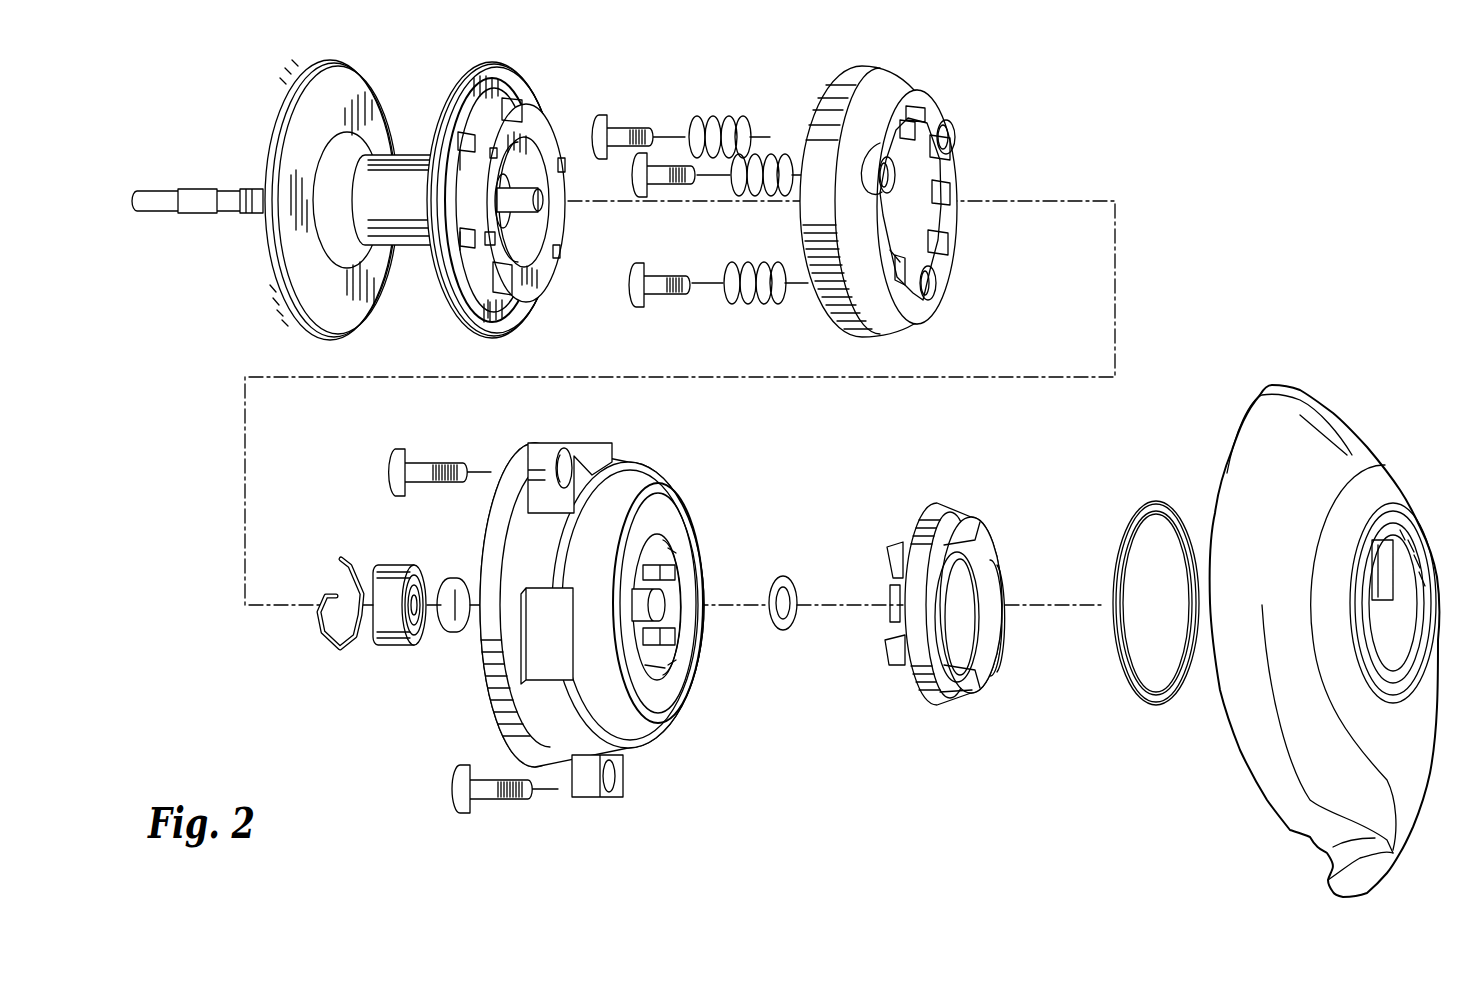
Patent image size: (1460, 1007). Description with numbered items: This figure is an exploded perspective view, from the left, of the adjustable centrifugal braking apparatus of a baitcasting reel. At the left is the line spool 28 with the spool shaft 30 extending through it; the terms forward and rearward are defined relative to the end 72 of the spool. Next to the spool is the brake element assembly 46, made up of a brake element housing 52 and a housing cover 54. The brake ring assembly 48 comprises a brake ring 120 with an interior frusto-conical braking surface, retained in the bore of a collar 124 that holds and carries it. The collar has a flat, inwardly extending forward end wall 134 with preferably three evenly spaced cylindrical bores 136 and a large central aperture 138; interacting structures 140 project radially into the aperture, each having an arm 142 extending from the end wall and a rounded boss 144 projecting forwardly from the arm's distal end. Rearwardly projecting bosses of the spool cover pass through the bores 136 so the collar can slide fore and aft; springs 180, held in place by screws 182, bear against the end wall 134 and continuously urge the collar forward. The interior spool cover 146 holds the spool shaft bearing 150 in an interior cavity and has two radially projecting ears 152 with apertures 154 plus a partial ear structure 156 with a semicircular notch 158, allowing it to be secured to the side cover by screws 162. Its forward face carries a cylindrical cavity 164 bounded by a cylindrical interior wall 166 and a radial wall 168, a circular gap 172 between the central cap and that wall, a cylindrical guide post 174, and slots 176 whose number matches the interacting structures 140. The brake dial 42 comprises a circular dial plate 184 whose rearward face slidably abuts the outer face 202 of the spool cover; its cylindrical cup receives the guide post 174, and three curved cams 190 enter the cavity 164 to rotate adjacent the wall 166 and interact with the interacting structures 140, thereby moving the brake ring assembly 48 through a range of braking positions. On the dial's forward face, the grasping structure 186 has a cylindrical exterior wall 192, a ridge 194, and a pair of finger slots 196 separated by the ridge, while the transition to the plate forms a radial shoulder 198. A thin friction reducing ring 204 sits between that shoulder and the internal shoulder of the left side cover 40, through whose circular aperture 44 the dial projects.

The line spool 28 is at (342, 64).
The spool shaft 30 is at (153, 187).
The brake element assembly 46 is at (544, 75).
The brake element housing 52 is at (478, 285).
The housing cover 54 is at (538, 275).
The end of line spool 72 is at (497, 313).
The brake ring assembly 48 is at (920, 193).
The brake ring 120 is at (812, 113).
The collar 124 is at (898, 320).
The forward end wall 134 is at (943, 188).
The cylindrical bores 136 is at (953, 128).
The central aperture 138 is at (907, 210).
The interacting structures 140 is at (913, 120).
The arm 142 is at (890, 250).
The rounded boss 144 is at (915, 240).
The biasing members 180 is at (725, 117).
The screws 182 is at (607, 112).
The interior spool cover 146 is at (621, 629).
The spool shaft bearing 150 is at (390, 574).
The radially projecting ears 152 is at (554, 454).
The apertures 154 is at (568, 460).
The partial ear structure 156 is at (643, 809).
The semicircular notch 158 is at (607, 795).
The screws 162 is at (388, 455).
The cylindrical cavity 164 is at (657, 552).
The cylindrical interior wall 166 is at (657, 663).
The radial wall 168 is at (641, 582).
The circular gap 172 is at (641, 638).
The cylindrical guide post 174 is at (665, 612).
The slots 176 is at (672, 631).
The outer face of spool cover 202 is at (657, 517).
The brake dial 42 is at (962, 615).
The circular dial plate 184 is at (942, 502).
The grasping structure 186 is at (967, 660).
The curved cams 190 is at (887, 652).
The cylindrical exterior wall 192 is at (948, 523).
The ridge 194 is at (978, 627).
The finger slots 196 is at (955, 583).
The radial shoulder 198 is at (948, 695).
The friction reducing ring 204 is at (1155, 507).
The left side cover 40 is at (1331, 630).
The circular aperture 44 is at (1407, 580).